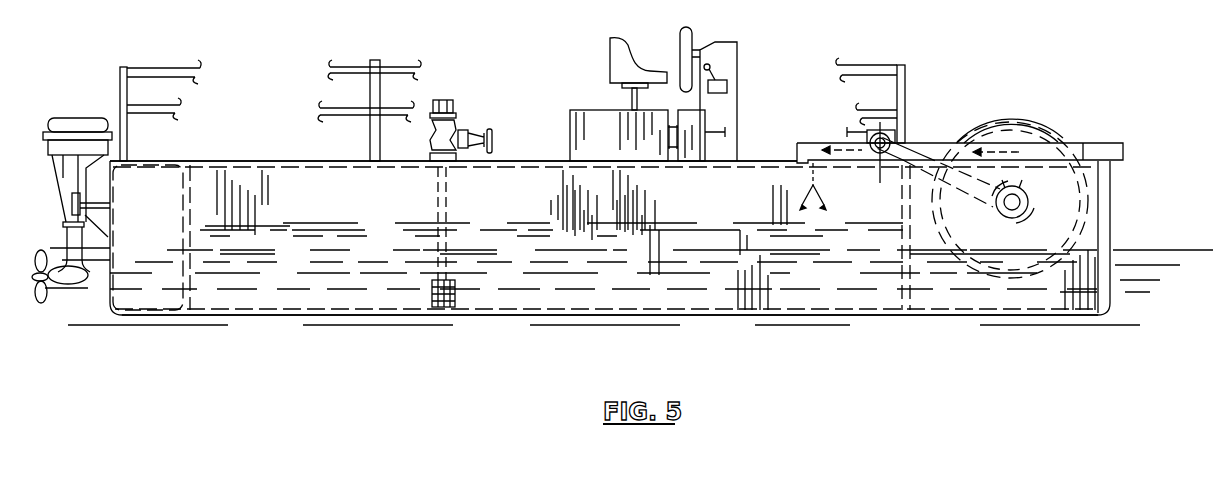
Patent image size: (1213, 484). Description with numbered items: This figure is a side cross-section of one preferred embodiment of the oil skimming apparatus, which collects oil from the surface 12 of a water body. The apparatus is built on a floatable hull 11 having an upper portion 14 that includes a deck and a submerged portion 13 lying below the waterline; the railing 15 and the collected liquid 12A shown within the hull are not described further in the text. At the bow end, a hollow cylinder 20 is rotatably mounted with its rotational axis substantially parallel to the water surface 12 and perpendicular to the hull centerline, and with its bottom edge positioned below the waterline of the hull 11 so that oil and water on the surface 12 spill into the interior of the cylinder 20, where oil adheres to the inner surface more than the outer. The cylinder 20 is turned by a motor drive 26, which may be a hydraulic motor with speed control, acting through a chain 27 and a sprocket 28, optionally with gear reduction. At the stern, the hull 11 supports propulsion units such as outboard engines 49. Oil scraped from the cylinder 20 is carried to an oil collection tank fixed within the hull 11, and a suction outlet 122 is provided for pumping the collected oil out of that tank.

The floatable hull 11 is at (106, 305).
The surface of a water body 12 is at (1143, 250).
The water in hull 12A is at (345, 250).
The submerged portion 13 is at (280, 318).
The upper portion 14 is at (540, 178).
The gunwale railing 15 is at (268, 161).
The hollow cylinder 20 is at (1030, 125).
The motor drive 26 is at (862, 135).
The chain 27 is at (912, 140).
The sprocket 28 is at (1020, 212).
The outboard engines 49 is at (75, 118).
The suction outlet 122 is at (443, 100).